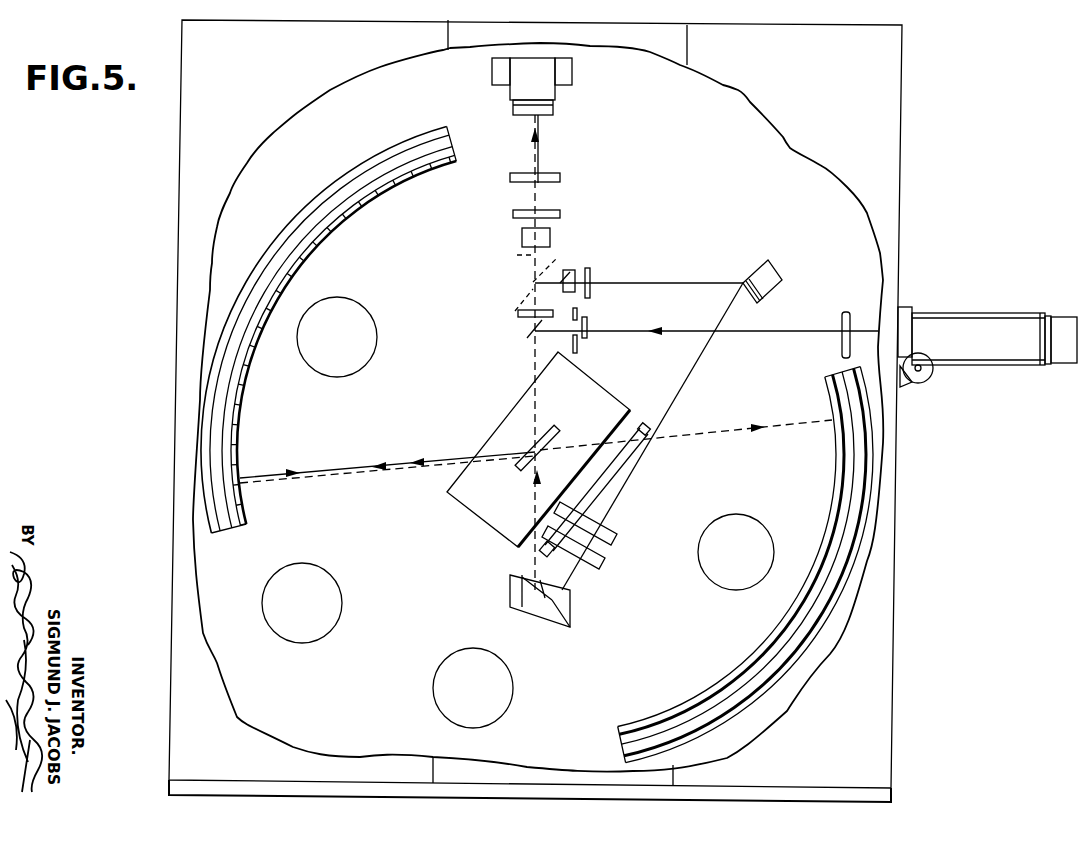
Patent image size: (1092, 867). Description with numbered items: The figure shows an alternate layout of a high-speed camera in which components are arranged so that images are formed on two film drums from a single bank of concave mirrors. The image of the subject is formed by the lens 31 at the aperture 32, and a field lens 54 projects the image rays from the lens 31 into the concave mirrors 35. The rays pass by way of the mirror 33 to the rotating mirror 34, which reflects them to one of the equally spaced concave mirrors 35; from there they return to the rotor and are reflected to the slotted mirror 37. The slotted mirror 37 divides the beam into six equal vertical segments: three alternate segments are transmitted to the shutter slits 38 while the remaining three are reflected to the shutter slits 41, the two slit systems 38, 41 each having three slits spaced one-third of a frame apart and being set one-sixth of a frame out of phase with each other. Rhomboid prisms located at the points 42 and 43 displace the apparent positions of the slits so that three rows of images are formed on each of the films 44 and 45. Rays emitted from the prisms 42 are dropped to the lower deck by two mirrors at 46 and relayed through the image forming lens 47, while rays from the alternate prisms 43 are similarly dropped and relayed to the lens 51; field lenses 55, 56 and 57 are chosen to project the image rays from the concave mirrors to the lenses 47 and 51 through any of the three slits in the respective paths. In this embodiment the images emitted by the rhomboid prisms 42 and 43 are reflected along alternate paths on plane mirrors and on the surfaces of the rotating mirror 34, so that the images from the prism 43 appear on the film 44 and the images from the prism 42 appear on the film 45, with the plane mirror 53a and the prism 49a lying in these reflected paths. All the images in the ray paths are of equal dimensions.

The lens 31 is at (846, 311).
The aperture 32 is at (578, 314).
The mirror 33 is at (527, 335).
The rotating mirror 34 is at (547, 439).
The concave mirror 35 is at (240, 476).
The slotted mirror 37 is at (523, 290).
The shutter slits 38 is at (553, 255).
The shutter slits 41 is at (565, 262).
The rhomboid prisms 42 is at (576, 276).
The rhomboid prisms 43 is at (522, 240).
The film 44 is at (244, 385).
The film 45 is at (822, 526).
The mirrors 46 is at (552, 92).
The image forming lens 47 is at (557, 178).
The prism 49a is at (549, 612).
The lens 51 is at (599, 560).
The photocell 53a is at (775, 264).
The field lens 54 is at (587, 338).
The field lens 55 is at (518, 314).
The field lens 56 is at (590, 290).
The field lens 57 is at (518, 213).